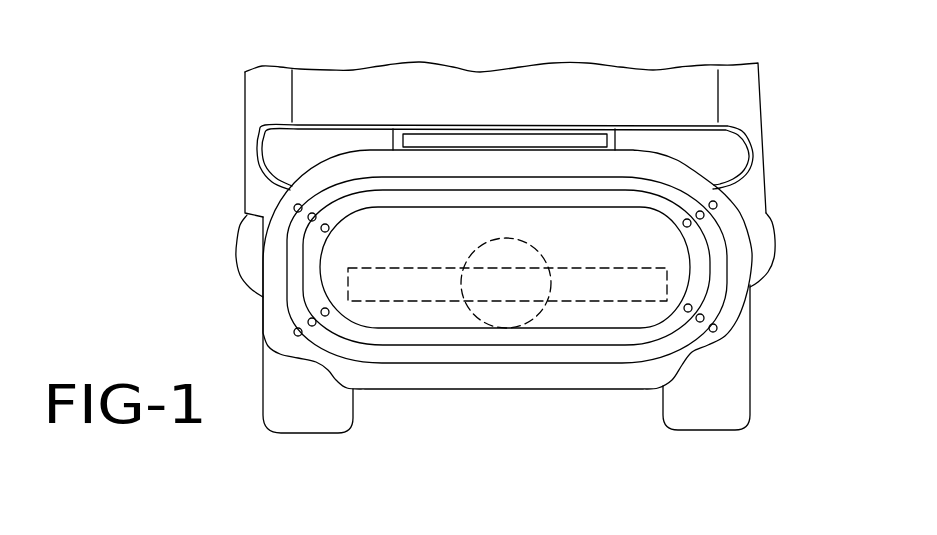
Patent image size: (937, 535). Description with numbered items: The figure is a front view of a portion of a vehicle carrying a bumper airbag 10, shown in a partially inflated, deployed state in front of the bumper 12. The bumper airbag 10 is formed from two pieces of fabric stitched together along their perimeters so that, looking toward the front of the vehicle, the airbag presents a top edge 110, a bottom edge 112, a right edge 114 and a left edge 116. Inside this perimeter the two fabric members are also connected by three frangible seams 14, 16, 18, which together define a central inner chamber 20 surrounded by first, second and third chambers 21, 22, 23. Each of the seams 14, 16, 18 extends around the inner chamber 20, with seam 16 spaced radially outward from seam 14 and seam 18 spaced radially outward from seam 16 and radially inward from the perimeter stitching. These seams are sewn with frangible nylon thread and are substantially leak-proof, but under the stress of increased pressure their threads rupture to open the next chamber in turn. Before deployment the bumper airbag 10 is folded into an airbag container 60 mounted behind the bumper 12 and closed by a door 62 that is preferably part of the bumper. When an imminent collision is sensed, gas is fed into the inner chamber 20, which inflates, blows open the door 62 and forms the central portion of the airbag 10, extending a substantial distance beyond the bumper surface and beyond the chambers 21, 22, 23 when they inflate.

The bumper airbag 10 is at (628, 396).
The bumper 12 is at (243, 270).
The first frangible seam 14 is at (342, 228).
The second frangible seam 16 is at (592, 200).
The third frangible seam 18 is at (591, 372).
The inner chamber 20 is at (413, 235).
The first chamber 21 is at (508, 198).
The second chamber 22 is at (600, 183).
The third chamber 23 is at (550, 160).
The airbag container 60 is at (473, 315).
The door 62 is at (648, 280).
The top edge 110 is at (437, 148).
The bottom edge 112 is at (412, 390).
The right edge 114 is at (755, 280).
The left edge 116 is at (263, 277).